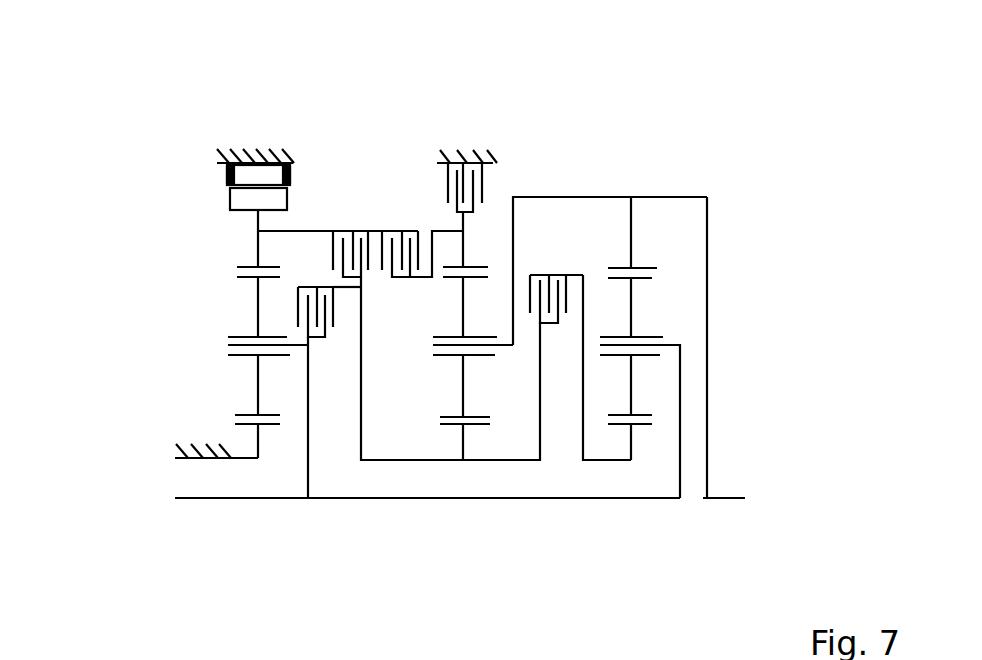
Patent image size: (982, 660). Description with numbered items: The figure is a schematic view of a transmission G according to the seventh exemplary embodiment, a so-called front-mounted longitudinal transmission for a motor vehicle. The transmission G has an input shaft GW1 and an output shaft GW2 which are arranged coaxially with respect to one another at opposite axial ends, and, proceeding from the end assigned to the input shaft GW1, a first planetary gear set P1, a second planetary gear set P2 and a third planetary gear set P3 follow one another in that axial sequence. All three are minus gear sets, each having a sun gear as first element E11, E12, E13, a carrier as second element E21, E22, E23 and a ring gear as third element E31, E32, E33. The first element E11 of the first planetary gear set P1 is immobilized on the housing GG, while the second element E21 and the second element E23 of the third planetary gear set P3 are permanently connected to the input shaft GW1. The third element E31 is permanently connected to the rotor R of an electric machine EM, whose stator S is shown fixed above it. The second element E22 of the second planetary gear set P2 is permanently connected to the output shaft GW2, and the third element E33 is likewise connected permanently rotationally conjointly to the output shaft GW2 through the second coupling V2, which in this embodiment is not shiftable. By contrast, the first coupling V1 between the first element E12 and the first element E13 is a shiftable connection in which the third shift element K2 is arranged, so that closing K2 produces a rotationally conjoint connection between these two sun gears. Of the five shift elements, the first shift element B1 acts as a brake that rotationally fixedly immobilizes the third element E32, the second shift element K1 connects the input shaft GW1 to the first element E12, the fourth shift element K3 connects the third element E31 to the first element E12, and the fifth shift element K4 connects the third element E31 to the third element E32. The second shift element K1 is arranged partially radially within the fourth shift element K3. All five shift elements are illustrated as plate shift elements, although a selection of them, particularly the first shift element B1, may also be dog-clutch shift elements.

The electric machine EM is at (164, 184).
The stator S is at (217, 174).
The rotor R is at (217, 200).
The first shift element B1 is at (490, 188).
The second shift element K1 is at (317, 281).
The third shift element K2 is at (558, 272).
The fourth shift element K3 is at (356, 226).
The fifth shift element K4 is at (401, 227).
The first planetary gear set P1 is at (194, 428).
The second planetary gear set P2 is at (490, 345).
The third planetary gear set P3 is at (734, 441).
The first element of the first planetary gear set E11 is at (274, 432).
The second element of the first planetary gear set E21 is at (299, 352).
The third element of the first planetary gear set E31 is at (248, 264).
The first element of the second planetary gear set E12 is at (445, 427).
The second element of the second planetary gear set E22 is at (508, 353).
The third element of the second planetary gear set E32 is at (483, 262).
The first element of the third planetary gear set E13 is at (650, 430).
The second element of the third planetary gear set E23 is at (670, 343).
The third element of the third planetary gear set E33 is at (648, 265).
The first coupling V1 is at (603, 462).
The second coupling V2 is at (633, 217).
The housing GG is at (197, 455).
The transmission G is at (732, 407).
The input shaft GW1 is at (214, 500).
The output shaft GW2 is at (720, 500).